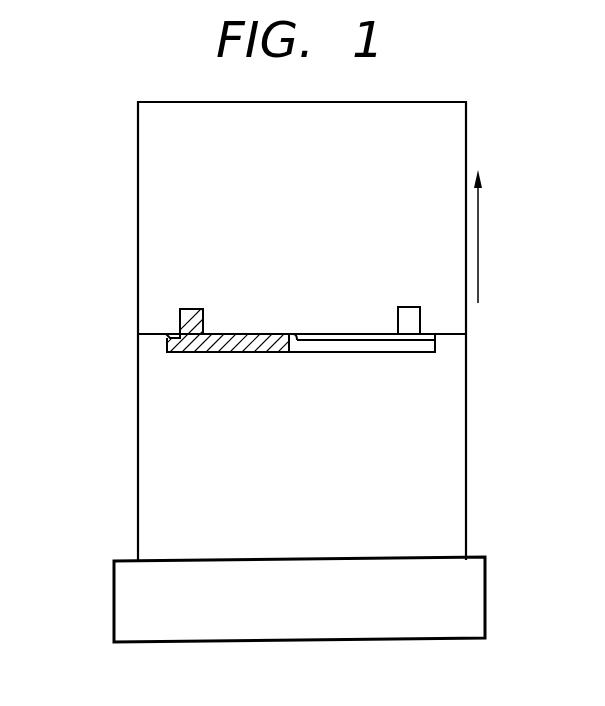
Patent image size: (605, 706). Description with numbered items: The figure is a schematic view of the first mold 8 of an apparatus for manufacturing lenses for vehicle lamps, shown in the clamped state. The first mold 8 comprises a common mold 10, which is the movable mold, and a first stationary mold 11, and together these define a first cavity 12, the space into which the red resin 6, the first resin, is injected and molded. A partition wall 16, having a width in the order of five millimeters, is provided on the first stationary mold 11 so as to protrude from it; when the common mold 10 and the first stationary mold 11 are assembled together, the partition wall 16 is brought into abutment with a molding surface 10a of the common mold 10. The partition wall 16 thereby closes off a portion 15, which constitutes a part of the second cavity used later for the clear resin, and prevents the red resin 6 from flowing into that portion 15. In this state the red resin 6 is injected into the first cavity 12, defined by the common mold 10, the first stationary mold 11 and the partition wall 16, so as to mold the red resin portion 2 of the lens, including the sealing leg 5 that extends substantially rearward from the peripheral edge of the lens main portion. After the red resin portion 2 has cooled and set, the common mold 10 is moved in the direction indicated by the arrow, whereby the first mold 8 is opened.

The first mold 8 is at (497, 152).
The common mold 10 is at (168, 135).
The molding surface 10a is at (339, 338).
The red resin portion 2 is at (245, 333).
The sealing leg 5 is at (192, 308).
The first cavity 12 is at (193, 345).
The red resin 6 is at (229, 350).
The partition wall 16 is at (297, 345).
The portion of second cavity 15 is at (382, 343).
The first stationary mold 11 is at (450, 543).